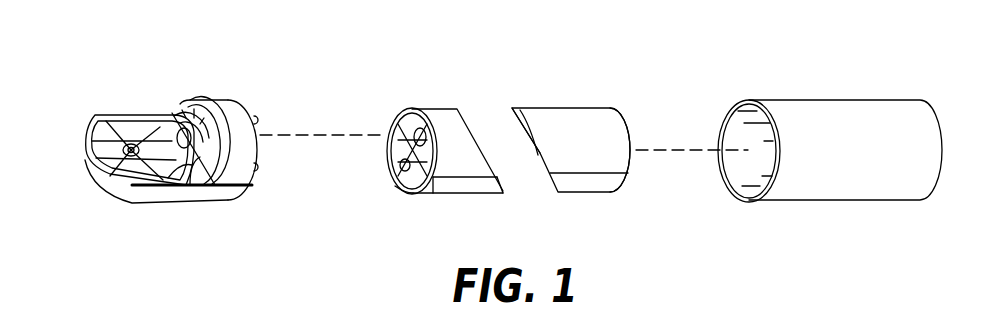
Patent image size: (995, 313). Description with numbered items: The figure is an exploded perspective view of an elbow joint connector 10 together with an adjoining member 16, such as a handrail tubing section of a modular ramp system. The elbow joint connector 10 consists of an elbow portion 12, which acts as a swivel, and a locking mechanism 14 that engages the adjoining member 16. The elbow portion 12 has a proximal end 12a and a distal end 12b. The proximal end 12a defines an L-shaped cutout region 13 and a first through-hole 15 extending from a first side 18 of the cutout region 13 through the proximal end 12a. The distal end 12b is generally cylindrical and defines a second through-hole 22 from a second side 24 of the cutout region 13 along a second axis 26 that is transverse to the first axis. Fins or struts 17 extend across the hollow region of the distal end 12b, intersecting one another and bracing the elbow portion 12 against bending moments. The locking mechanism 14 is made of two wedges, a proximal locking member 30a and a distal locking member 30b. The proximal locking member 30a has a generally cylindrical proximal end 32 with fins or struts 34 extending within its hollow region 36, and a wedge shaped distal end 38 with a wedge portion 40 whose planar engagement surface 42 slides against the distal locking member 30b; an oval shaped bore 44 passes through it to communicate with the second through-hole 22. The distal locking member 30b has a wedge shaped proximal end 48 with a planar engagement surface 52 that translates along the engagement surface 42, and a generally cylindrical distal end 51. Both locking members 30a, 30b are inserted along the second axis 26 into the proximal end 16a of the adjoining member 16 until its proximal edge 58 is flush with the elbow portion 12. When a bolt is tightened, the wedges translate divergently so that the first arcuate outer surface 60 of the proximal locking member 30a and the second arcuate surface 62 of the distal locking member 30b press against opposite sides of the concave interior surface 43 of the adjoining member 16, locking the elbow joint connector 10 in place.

The elbow joint connector 10 is at (384, 69).
The elbow portion 12 is at (180, 148).
The proximal end 12a is at (102, 172).
The distal end 12b is at (230, 168).
The L-shaped cutout region 13 is at (178, 118).
The locking mechanism 14 is at (489, 111).
The first through-hole 15 is at (126, 149).
The adjoining member 16 is at (824, 128).
The proximal end 16a is at (721, 103).
The fins or struts 17 is at (257, 118).
The first side 18 is at (190, 176).
The second through-hole 22 is at (187, 128).
The second side 24 is at (202, 158).
The second axis 26 is at (310, 134).
The proximal locking member 30a is at (433, 137).
The distal locking member 30b is at (584, 135).
The proximal end 32 is at (427, 117).
The fins or struts 34 is at (400, 190).
The hollow region 36 is at (387, 128).
The wedge shaped distal end 38 is at (480, 178).
The wedge portion 40 is at (491, 172).
The planar engagement surface 42 is at (465, 118).
The interior surface 43 is at (750, 189).
The oval shaped bore 44 is at (393, 170).
The wedge shaped proximal end 48 is at (542, 150).
The distal end 51 is at (605, 113).
The planar engagement surface 52 is at (547, 178).
The proximal edge 58 is at (767, 115).
The first arcuate outer surface 60 is at (447, 198).
The second arcuate surface 62 is at (526, 110).